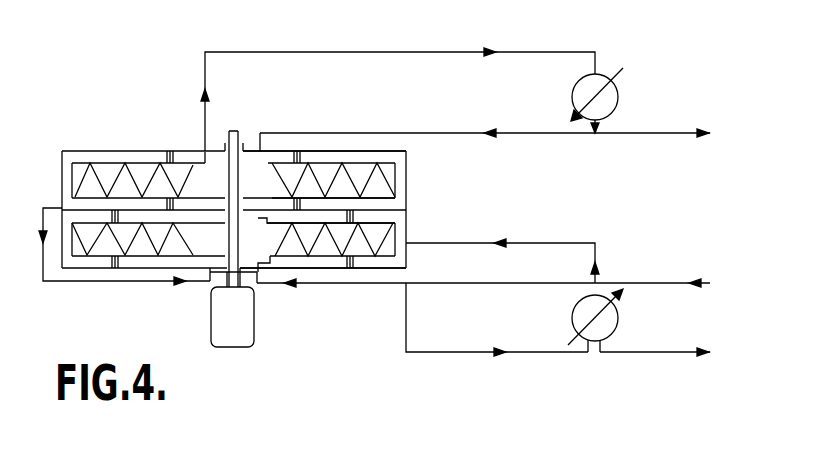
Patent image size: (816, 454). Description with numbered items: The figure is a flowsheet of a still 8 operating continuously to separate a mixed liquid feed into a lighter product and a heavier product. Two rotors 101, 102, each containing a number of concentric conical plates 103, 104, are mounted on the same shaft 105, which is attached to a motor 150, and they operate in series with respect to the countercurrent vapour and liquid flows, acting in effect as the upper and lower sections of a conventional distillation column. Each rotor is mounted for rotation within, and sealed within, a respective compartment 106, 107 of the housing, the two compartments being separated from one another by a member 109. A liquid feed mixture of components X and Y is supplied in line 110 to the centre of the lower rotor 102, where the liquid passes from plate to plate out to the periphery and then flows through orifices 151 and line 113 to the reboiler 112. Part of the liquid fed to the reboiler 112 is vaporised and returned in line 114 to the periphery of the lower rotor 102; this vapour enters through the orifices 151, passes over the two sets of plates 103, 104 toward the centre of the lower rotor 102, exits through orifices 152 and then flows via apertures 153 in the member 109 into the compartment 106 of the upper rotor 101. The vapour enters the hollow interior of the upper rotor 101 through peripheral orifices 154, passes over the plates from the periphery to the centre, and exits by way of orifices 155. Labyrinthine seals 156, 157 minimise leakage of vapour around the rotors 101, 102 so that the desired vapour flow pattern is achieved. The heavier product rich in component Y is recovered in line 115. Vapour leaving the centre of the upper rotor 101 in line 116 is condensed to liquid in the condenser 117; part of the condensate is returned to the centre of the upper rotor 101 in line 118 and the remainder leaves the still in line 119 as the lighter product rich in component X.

The extruder apparatus 8 is at (62, 178).
The upper rotor 101 is at (407, 183).
The lower rotor 102 is at (397, 240).
The concentric conical plates 103 is at (148, 175).
The concentric conical plates 104 is at (110, 238).
The shaft 105 is at (238, 130).
The compartment 106 is at (402, 162).
The compartment 107 is at (403, 263).
The member 109 is at (400, 210).
The line 110 is at (628, 287).
The reboiler 112 is at (622, 328).
The line 113 is at (406, 325).
The line 114 is at (543, 242).
The line 115 is at (628, 356).
The line 116 is at (437, 54).
The condenser 117 is at (622, 87).
The line 118 is at (525, 135).
The line 119 is at (628, 135).
The motor 150 is at (253, 338).
The orifices 151 is at (397, 227).
The orifices 152 is at (205, 225).
The apertures 153 is at (318, 223).
The peripheral orifices 154 is at (398, 198).
The orifices 155 is at (207, 152).
The labyrinthine seal 156 is at (357, 218).
The labyrinthine seal 157 is at (303, 205).